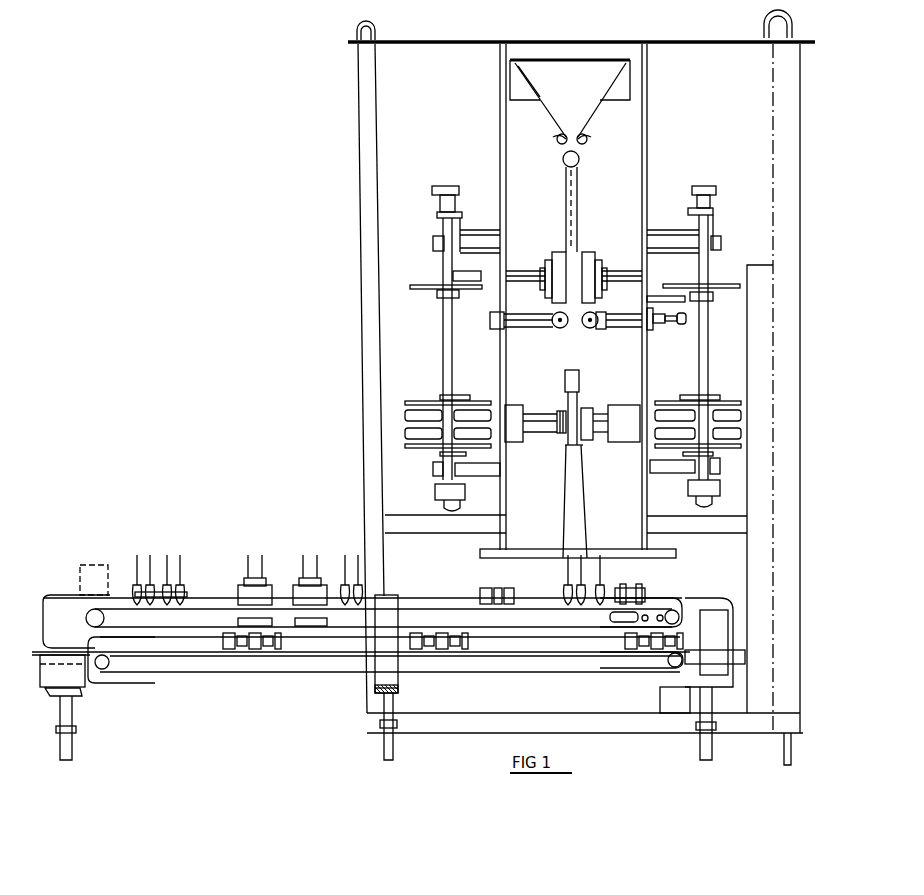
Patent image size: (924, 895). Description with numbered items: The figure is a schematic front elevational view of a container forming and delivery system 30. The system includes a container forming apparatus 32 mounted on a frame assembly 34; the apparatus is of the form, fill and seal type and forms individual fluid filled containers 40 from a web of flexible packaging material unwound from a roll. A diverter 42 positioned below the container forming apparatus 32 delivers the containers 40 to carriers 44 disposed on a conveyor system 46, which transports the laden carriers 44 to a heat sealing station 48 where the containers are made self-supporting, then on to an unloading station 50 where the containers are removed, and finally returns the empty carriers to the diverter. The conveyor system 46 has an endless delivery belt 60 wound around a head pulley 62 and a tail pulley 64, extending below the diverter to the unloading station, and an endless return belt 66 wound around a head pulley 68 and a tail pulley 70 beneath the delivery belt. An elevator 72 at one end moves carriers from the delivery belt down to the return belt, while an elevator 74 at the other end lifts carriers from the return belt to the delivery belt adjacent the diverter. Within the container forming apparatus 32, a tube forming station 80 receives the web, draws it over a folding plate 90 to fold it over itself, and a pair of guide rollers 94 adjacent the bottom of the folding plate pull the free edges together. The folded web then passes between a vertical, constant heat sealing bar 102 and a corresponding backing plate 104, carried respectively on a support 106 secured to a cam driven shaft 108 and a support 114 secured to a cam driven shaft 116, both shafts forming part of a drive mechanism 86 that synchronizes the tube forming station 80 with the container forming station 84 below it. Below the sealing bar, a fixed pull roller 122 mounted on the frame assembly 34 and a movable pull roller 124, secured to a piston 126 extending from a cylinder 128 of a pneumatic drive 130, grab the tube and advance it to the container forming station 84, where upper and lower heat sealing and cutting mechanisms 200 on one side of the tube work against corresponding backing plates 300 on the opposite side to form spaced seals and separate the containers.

The container forming and delivery system 30 is at (160, 88).
The container forming apparatus 32 is at (680, 134).
The frame assembly 34 is at (350, 342).
The fluid filled containers 40 is at (340, 580).
The diverter 42 is at (585, 515).
The carriers 44 is at (186, 600).
The conveyor system 46 is at (285, 690).
The heat sealing station 48 is at (280, 552).
The unloading station 50 is at (112, 546).
The endless delivery belt 60 is at (414, 598).
The head pulley 62 is at (676, 600).
The tail pulley 64 is at (88, 618).
The endless return belt 66 is at (190, 660).
The head pulley 68 is at (668, 668).
The tail pulley 70 is at (106, 670).
The elevator 72 is at (70, 690).
The elevator 74 is at (735, 628).
The tube forming station 80 is at (490, 100).
The container forming station 84 is at (538, 473).
The drive mechanism 86 is at (415, 205).
The folding plate 90 is at (600, 84).
The guide rollers 94 is at (556, 138).
The heat sealing bar 102 is at (558, 252).
The backing plate 104 is at (588, 252).
The support 106 is at (548, 260).
The cam driven shaft 108 is at (513, 284).
The support 114 is at (600, 260).
The cam driven shaft 116 is at (618, 284).
The pull roller 122 is at (556, 329).
The pull roller 124 is at (592, 329).
The piston 126 is at (640, 300).
The cylinder 128 is at (650, 336).
The pneumatic drive 130 is at (666, 324).
The heat sealing and cutting mechanisms 200 is at (556, 434).
The backing plates 300 is at (590, 440).